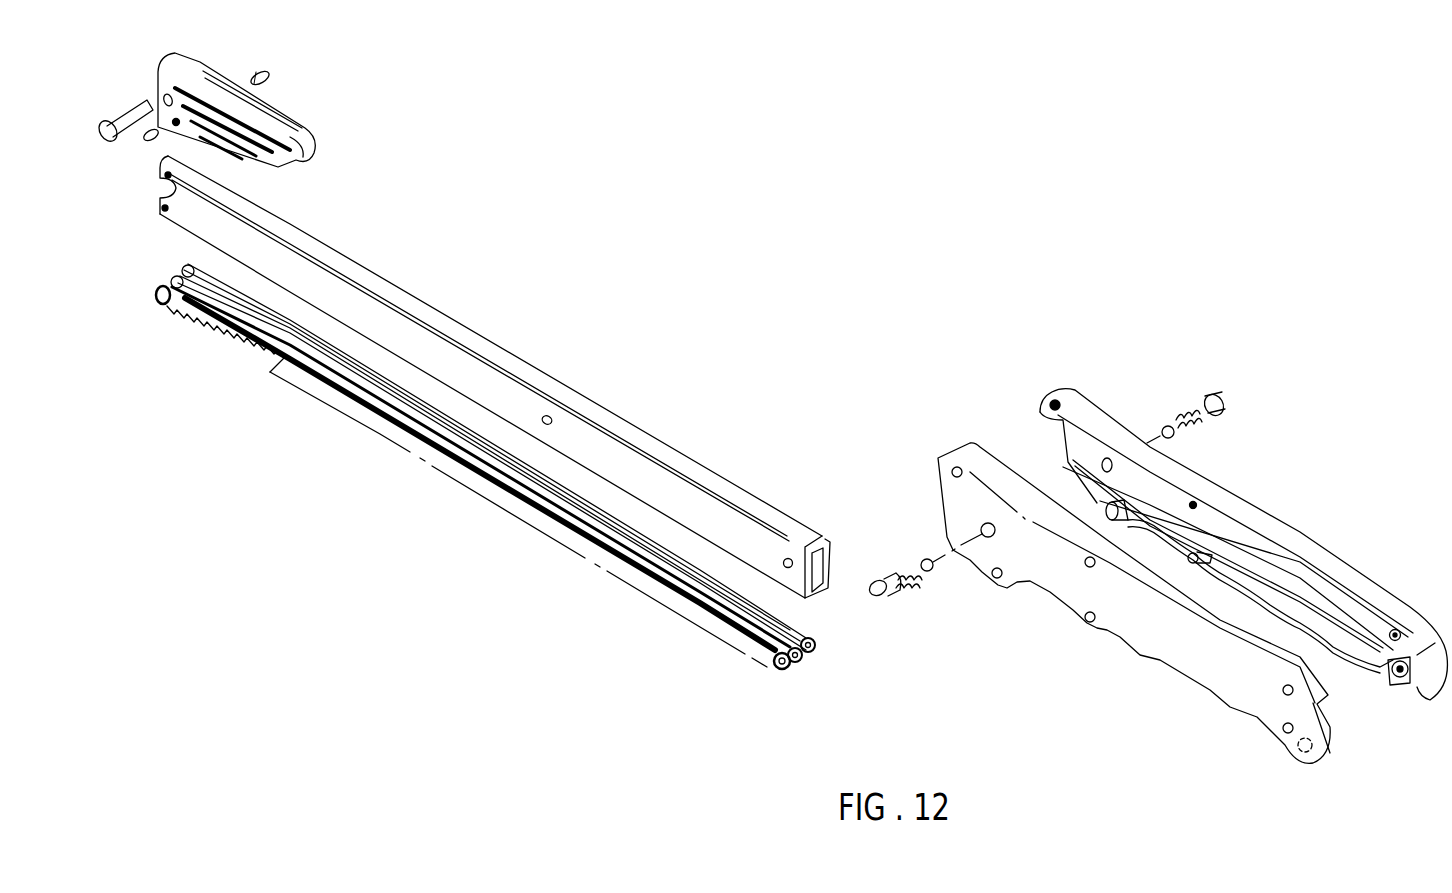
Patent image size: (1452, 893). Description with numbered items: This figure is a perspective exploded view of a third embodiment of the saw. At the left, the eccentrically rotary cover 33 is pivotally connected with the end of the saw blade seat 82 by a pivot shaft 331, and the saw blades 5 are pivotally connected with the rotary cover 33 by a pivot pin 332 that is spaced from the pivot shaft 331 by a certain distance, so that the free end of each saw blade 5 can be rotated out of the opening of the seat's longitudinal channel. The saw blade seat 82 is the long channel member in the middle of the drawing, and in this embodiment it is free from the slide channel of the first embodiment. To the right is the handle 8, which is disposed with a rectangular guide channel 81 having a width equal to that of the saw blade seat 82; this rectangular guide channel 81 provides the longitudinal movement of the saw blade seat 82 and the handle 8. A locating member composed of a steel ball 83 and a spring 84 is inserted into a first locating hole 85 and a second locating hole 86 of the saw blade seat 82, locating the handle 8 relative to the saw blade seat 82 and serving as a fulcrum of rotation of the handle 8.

The saw blade 5 is at (458, 475).
The handle 8 is at (1110, 622).
The eccentrically rotary cover 33 is at (190, 70).
The rectangular guide channel 81 is at (1393, 667).
The saw blade seat 82 is at (627, 428).
The steel ball 83 is at (932, 571).
The spring 84 is at (910, 583).
The first locating hole 85 is at (786, 570).
The second locating hole 86 is at (543, 422).
The pivot shaft 331 is at (270, 77).
The pivot pin 332 is at (132, 115).